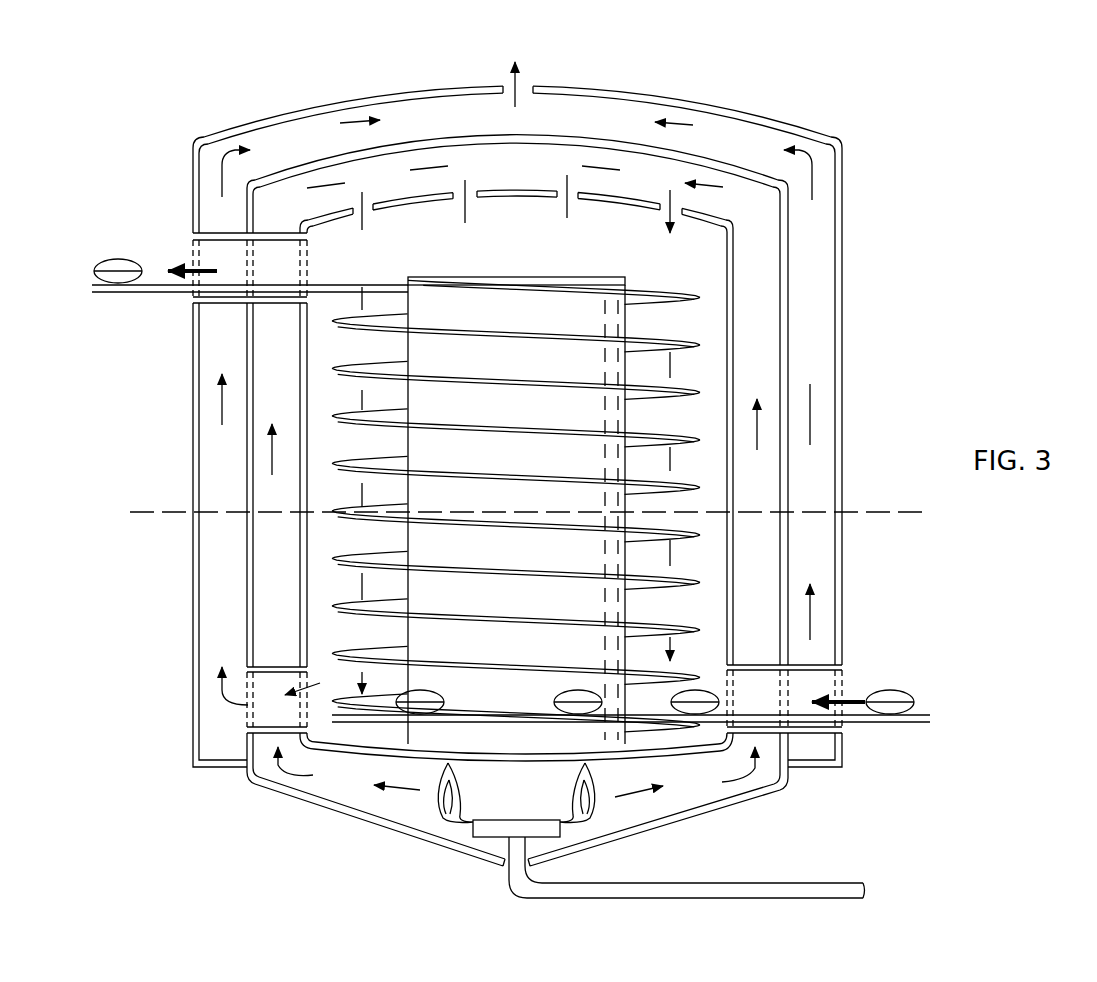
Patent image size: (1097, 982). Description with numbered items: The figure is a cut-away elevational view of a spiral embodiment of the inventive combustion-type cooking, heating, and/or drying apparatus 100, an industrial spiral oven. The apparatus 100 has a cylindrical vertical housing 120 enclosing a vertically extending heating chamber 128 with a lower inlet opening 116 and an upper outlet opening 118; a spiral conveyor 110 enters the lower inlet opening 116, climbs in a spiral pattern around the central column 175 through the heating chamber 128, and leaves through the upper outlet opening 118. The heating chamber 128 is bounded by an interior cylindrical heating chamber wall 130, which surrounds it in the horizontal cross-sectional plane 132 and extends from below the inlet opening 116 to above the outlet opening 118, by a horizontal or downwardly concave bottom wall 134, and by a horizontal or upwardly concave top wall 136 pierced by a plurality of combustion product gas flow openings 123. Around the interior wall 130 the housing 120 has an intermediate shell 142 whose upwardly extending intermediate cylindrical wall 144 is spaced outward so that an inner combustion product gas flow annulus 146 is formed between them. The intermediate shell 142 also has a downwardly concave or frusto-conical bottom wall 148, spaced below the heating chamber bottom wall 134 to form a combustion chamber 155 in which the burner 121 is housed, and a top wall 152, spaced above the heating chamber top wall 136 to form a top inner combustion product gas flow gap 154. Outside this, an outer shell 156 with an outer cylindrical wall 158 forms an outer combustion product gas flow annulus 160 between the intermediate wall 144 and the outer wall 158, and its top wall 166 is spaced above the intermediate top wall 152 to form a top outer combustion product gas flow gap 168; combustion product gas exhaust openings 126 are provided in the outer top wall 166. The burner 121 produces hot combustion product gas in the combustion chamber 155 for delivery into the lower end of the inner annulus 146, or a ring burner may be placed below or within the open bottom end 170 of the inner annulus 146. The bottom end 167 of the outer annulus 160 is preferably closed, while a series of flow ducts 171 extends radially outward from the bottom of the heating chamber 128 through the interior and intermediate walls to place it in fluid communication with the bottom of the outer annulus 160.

The spiral heating apparatus 100 is at (175, 80).
The spiral conveyor 110 is at (337, 603).
The lower inlet opening 116 is at (838, 681).
The upper outlet opening 118 is at (199, 249).
The cylindrical vertical housing 120 is at (843, 180).
The burner 121 is at (517, 822).
The combustion product gas flow openings 123 is at (353, 213).
The combustion product gas exhaust openings 126 is at (503, 85).
The heating chamber 128 is at (433, 254).
The interior cylindrical heating chamber wall 130 is at (733, 488).
The horizontal cross-sectional plane 132 is at (890, 513).
The heating chamber bottom wall 134 is at (353, 748).
The heating chamber top wall 136 is at (703, 220).
The intermediate shell 142 is at (196, 433).
The intermediate cylindrical wall 144 is at (245, 442).
The inner combustion product gas flow annulus 146 is at (770, 387).
The intermediate shell bottom wall 148 is at (703, 815).
The intermediate shell top wall 152 is at (627, 137).
The top inner combustion product gas flow gap 154 is at (463, 155).
The combustion chamber 155 is at (400, 810).
The outer shell 156 is at (184, 504).
The outer cylindrical wall 158 is at (192, 332).
The outer combustion product gas flow annulus 160 is at (817, 277).
The outer shell top wall 166 is at (570, 83).
The bottom end of outer annulus 167 is at (813, 768).
The top outer combustion product gas flow gap 168 is at (713, 130).
The open bottom end of inner annulus 170 is at (262, 777).
The flow ducts 171 is at (257, 713).
The central column 175 is at (520, 275).